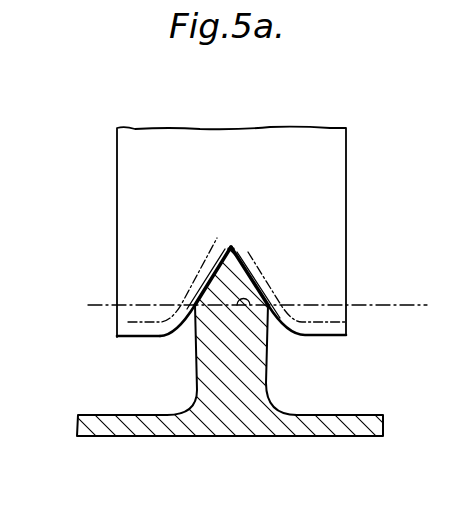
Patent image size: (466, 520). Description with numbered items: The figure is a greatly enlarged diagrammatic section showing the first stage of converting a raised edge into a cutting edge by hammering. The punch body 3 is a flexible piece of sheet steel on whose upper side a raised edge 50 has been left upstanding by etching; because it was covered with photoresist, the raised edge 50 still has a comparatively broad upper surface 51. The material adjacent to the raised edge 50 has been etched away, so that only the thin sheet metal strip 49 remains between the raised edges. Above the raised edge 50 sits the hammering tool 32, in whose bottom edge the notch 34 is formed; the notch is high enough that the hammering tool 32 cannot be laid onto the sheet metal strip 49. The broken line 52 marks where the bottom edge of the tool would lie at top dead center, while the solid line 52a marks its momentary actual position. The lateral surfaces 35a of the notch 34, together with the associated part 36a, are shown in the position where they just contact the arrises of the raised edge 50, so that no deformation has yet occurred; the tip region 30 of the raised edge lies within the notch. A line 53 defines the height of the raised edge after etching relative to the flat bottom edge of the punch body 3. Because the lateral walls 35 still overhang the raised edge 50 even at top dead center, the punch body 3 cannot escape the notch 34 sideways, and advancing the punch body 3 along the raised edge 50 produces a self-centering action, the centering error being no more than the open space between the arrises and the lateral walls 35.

The punch body 3 is at (257, 445).
The apex edge of rib 30 is at (229, 247).
The hammering tool 32 is at (178, 135).
The notch 34 is at (203, 282).
The lateral walls 35 is at (215, 237).
The lateral surfaces 35a is at (210, 270).
The part of hammering tool 36a is at (236, 252).
The sheet metal strip 49 is at (128, 432).
The raised edge 50 is at (225, 380).
The upper surface 51 is at (269, 310).
The broken line 52 is at (139, 323).
The solid line 52a is at (130, 338).
The line 53 is at (367, 307).